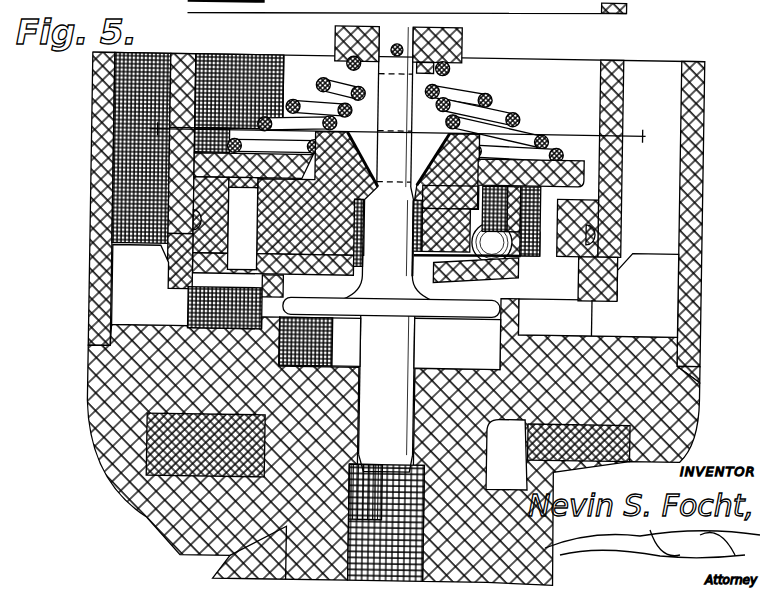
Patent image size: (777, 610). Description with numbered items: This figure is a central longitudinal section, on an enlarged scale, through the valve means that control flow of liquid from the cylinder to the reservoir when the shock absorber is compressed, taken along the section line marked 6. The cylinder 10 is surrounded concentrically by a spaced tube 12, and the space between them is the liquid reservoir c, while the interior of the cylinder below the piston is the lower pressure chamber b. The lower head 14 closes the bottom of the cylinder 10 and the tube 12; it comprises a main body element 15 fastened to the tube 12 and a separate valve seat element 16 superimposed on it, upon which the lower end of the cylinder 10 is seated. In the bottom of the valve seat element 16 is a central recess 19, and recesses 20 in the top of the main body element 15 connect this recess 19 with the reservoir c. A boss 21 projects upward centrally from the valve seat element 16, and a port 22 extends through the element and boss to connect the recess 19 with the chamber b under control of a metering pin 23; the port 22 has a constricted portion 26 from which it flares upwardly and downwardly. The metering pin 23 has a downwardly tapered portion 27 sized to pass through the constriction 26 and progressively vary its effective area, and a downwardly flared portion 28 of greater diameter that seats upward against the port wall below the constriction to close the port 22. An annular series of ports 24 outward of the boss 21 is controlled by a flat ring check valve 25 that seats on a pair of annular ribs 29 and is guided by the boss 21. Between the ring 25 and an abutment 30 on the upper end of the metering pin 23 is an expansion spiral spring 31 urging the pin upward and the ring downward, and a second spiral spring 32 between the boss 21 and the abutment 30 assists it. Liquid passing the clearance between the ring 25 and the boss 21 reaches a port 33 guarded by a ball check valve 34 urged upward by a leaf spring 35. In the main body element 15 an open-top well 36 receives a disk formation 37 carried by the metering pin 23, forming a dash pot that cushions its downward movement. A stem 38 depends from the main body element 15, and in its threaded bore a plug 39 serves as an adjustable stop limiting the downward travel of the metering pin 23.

The section line 6 is at (396, 133).
The cylinder 10 is at (613, 74).
The tube 12 is at (95, 190).
The lower head 14 is at (92, 432).
The main body element 15 is at (700, 401).
The valve seat element 16 is at (196, 258).
The central recess 19 is at (570, 317).
The recesses 20 is at (150, 311).
The boss 21 is at (300, 118).
The port 22 is at (466, 123).
The metering pin 23 is at (392, 249).
The ports 24 is at (560, 216).
The check valve 25 is at (537, 163).
The constricted portion 26 is at (362, 184).
The downwardly tapered portion 27 is at (426, 182).
The downwardly flared portion 28 is at (449, 200).
The annular ribs 29 is at (560, 188).
The abutment 30 is at (457, 44).
The expansion spiral spring 31 is at (463, 96).
The spiral spring 32 is at (336, 90).
The port 33 is at (473, 236).
The check valve 34 is at (521, 263).
The spring 35 is at (467, 270).
The open-top well 36 is at (457, 346).
The disk formation 37 is at (325, 325).
The stem 38 is at (307, 553).
The plug 39 is at (424, 550).
The lower pressure chamber b is at (422, 70).
The liquid reservoir c is at (660, 94).